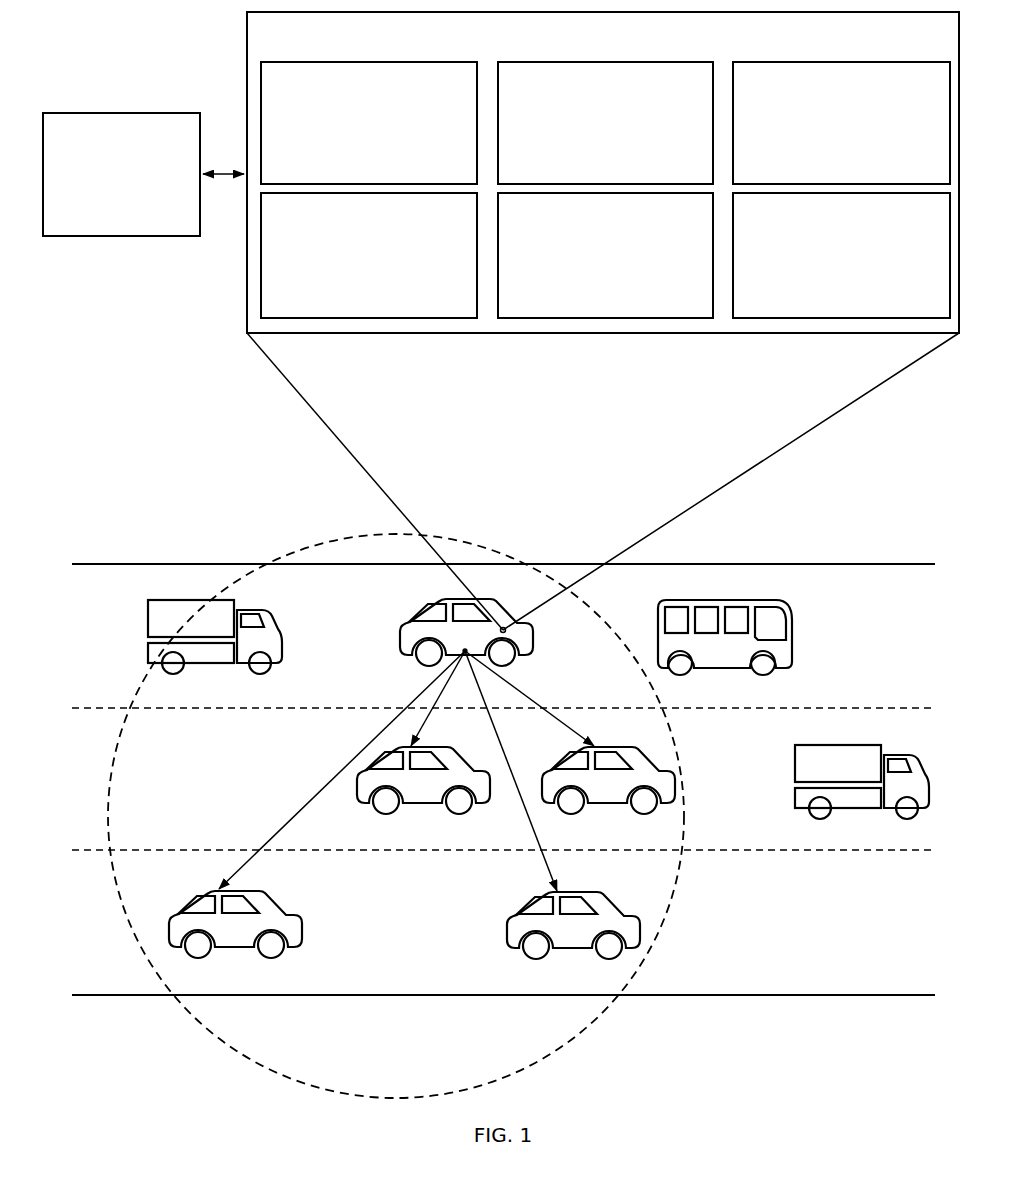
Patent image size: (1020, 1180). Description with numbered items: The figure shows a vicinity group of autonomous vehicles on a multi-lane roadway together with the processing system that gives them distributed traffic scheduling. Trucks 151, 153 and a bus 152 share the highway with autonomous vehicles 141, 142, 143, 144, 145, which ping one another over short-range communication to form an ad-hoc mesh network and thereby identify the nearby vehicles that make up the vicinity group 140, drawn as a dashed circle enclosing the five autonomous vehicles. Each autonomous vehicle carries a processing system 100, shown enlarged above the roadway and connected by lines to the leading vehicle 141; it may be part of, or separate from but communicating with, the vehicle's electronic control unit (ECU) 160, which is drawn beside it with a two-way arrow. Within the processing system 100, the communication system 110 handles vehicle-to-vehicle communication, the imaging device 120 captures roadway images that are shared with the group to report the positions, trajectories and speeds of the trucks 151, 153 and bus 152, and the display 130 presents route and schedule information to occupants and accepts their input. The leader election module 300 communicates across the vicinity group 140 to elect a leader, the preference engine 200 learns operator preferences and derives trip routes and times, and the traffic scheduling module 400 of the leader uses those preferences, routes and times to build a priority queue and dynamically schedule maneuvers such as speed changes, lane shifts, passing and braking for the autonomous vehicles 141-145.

The processing system 100 is at (735, 47).
The communication system 110 is at (587, 164).
The imaging device 120 is at (351, 150).
The display 130 is at (351, 283).
The electronic control unit (ECU) 160 is at (103, 201).
The preference engine 200 is at (587, 297).
The leader election module 300 is at (823, 296).
The traffic scheduling module 400 is at (823, 176).
The vicinity group 140 is at (329, 533).
The autonomous vehicle 141 is at (397, 622).
The autonomous vehicle 142 is at (395, 811).
The autonomous vehicle 143 is at (592, 813).
The autonomous vehicle 144 is at (503, 931).
The autonomous vehicle 145 is at (198, 886).
The truck 151 is at (144, 626).
The bus 152 is at (796, 626).
The truck 153 is at (840, 826).